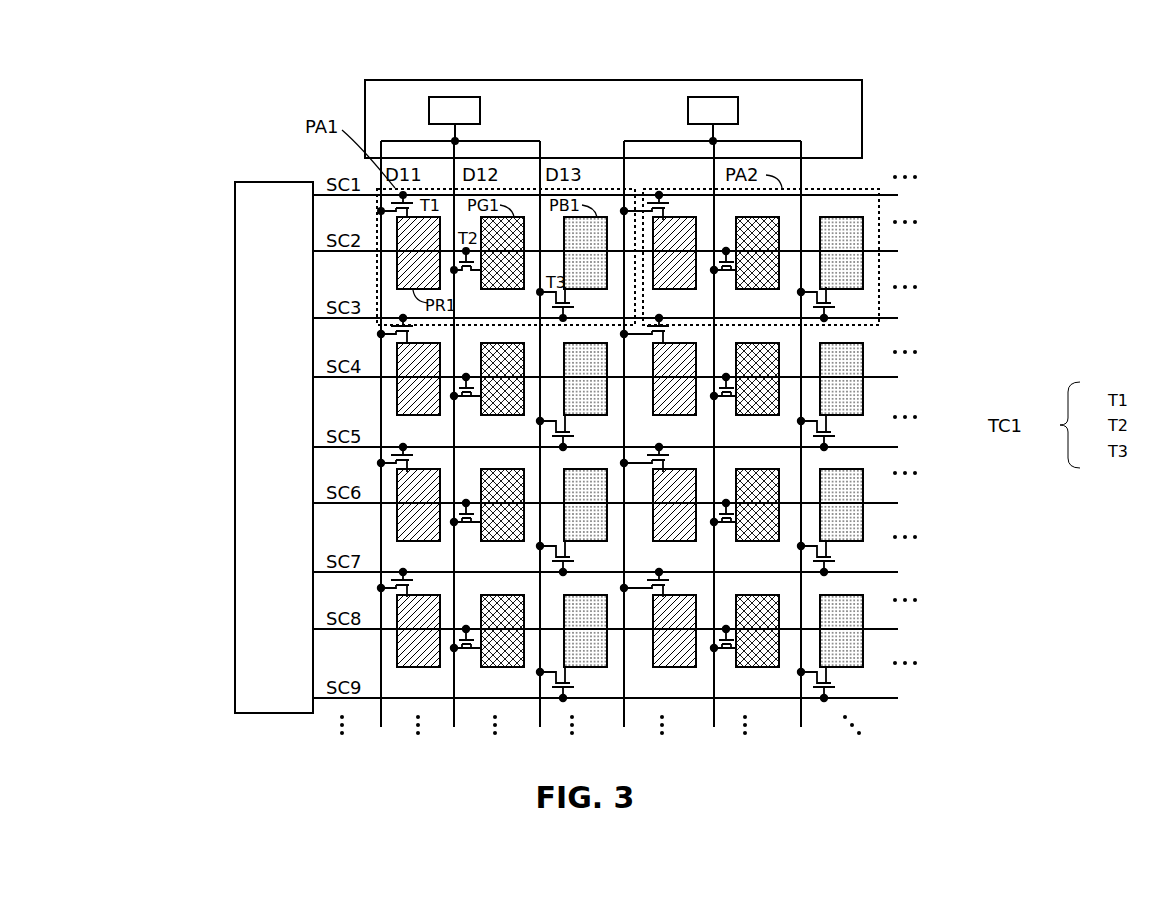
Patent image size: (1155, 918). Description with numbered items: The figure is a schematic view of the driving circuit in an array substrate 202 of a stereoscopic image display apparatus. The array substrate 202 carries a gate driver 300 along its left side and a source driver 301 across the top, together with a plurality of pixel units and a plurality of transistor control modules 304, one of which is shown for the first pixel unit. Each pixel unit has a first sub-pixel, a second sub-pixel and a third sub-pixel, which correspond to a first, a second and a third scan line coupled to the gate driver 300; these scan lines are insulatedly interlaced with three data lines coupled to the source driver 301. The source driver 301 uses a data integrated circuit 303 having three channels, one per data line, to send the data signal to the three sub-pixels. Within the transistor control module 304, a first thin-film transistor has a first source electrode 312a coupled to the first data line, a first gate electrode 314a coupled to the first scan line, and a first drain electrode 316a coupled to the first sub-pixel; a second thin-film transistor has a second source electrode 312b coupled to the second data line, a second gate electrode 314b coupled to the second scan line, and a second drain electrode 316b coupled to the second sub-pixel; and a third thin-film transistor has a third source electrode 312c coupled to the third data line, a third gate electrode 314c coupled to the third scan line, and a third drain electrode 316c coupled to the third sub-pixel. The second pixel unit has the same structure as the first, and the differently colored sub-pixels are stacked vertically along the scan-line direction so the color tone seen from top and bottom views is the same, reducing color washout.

The array substrate 202 is at (1069, 84).
The gate driver 300 is at (280, 181).
The source driver 301 is at (606, 80).
The data integrated circuit 303 is at (454, 96).
The transistor control modules 304 is at (1095, 190).
The first gate electrode 314a is at (390, 203).
The first source electrode 312a is at (380, 211).
The first drain electrode 316a is at (406, 213).
The second gate electrode 314b is at (459, 262).
The second source electrode 312b is at (452, 271).
The second drain electrode 316b is at (478, 271).
The third gate electrode 314c is at (556, 307).
The third source electrode 312c is at (537, 293).
The third drain electrode 316c is at (567, 295).